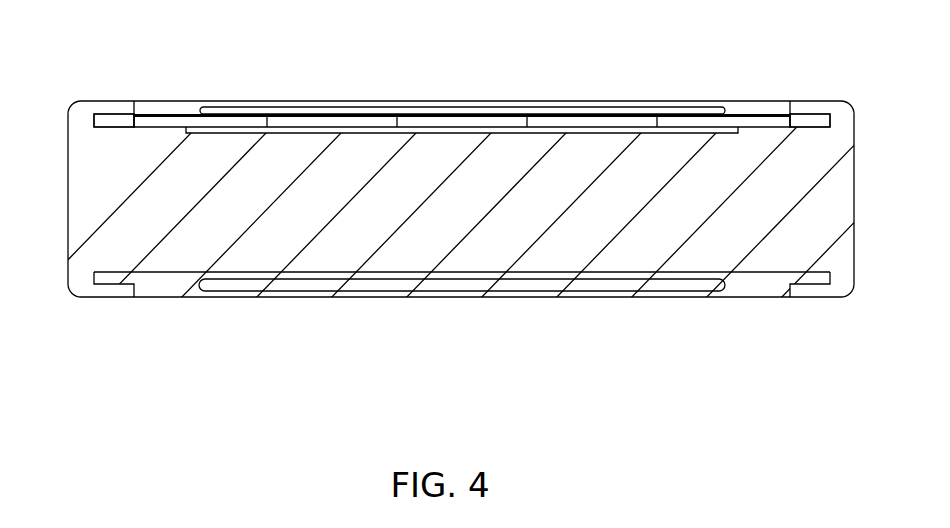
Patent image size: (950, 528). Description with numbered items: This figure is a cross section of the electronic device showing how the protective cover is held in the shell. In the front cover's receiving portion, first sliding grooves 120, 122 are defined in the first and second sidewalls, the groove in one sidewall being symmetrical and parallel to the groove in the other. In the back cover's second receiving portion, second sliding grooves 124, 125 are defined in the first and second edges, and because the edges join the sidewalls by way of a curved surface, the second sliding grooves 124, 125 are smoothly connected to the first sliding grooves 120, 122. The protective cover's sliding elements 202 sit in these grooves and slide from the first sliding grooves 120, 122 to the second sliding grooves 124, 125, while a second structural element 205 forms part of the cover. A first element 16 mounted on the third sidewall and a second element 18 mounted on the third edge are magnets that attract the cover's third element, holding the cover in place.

The first element 16 is at (238, 112).
The second element 18 is at (372, 283).
The first sliding groove 120 is at (119, 115).
The first sliding groove 122 is at (810, 113).
The second sliding groove 124 is at (110, 277).
The second sliding groove 125 is at (812, 278).
The sliding element 202 is at (103, 122).
The second structural element 205 is at (438, 115).